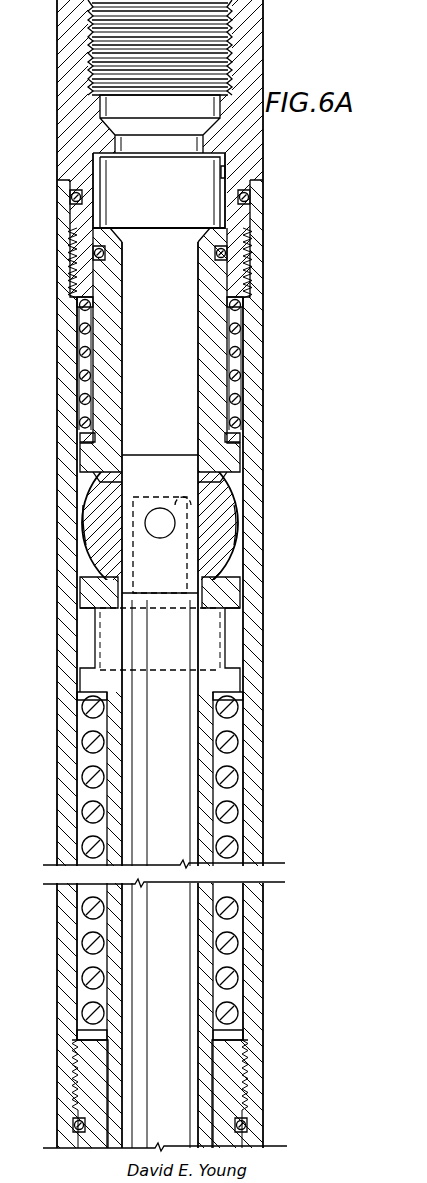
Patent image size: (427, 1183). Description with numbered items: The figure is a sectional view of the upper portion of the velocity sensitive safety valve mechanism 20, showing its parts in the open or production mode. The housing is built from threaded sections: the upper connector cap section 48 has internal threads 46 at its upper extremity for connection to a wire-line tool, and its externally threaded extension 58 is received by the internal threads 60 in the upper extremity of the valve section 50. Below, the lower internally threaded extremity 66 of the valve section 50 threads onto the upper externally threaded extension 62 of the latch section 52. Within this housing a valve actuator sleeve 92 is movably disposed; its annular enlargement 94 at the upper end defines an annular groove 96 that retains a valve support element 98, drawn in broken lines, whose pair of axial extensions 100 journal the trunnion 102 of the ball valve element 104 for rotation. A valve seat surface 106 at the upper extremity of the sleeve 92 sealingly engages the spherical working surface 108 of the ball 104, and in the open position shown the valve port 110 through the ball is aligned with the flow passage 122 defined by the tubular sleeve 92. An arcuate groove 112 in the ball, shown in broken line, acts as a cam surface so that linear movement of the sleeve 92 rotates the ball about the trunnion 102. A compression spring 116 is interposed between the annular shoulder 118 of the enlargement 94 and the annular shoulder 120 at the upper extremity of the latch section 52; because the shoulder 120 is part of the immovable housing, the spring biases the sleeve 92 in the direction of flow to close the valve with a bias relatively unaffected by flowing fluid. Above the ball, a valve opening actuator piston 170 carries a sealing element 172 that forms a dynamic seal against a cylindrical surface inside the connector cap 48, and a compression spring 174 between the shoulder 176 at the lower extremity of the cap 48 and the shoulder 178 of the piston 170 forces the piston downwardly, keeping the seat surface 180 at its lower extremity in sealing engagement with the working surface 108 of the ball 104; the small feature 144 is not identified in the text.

The velocity sensitive safety valve mechanism 20 is at (268, 282).
The internal threads 46 is at (93, 45).
The upper connector cap section 48 is at (68, 116).
The valve section 50 is at (253, 452).
The latch section 52 is at (70, 1146).
The externally threaded extension 58 is at (240, 236).
The internal threads 60 is at (75, 268).
The upper externally threaded extension 62 is at (240, 1090).
The lower internally threaded extremity 66 is at (83, 1078).
The valve actuator sleeve 92 is at (230, 776).
The annular enlargement 94 is at (90, 598).
The annular groove 96 is at (230, 648).
The valve support element 98 is at (90, 664).
The axial extensions 100 is at (255, 537).
The trunnion 102 is at (90, 535).
The ball valve element 104 is at (97, 562).
The valve seat surface 106 is at (225, 575).
The spherical working surface 108 is at (235, 553).
The valve port 110 is at (83, 512).
The arcuate groove 112 is at (230, 522).
The compression spring 116 is at (88, 777).
The annular shoulder 118 is at (80, 712).
The annular shoulder 120 is at (240, 1030).
The flow passage 122 is at (125, 968).
The port 144 is at (200, 497).
The valve opening actuator piston 170 is at (243, 348).
The sealing element 172 is at (97, 250).
The compression spring 174 is at (228, 172).
The shoulder 176 is at (80, 312).
The shoulder 178 is at (82, 438).
The seat surface 180 is at (100, 482).